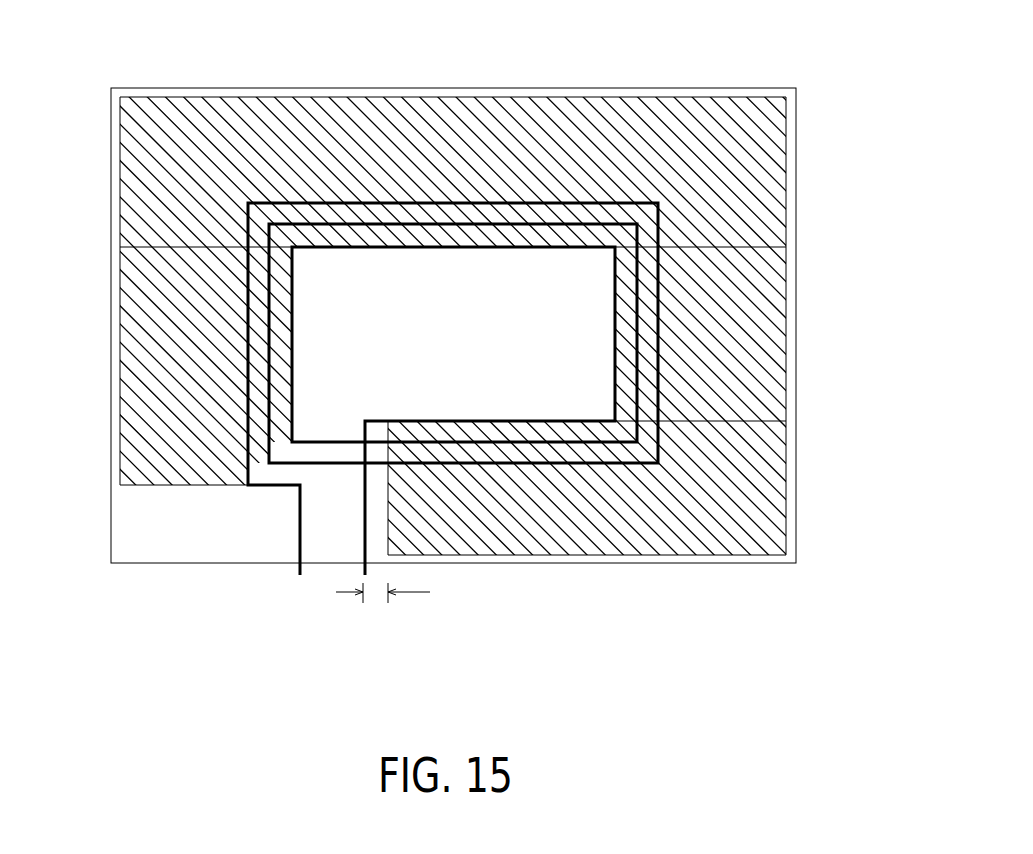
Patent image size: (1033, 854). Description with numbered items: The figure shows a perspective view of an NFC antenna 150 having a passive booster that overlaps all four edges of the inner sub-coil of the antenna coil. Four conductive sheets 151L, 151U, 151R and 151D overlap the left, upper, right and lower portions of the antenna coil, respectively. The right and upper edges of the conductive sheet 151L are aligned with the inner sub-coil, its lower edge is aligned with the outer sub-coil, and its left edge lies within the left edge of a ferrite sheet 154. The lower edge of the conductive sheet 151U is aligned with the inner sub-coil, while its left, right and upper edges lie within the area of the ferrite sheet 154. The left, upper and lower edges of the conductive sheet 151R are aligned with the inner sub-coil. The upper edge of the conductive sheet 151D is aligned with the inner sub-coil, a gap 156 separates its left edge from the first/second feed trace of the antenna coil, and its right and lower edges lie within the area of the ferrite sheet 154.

The NFC antenna 150 is at (727, 61).
The conductive sheet 151U is at (458, 110).
The conductive sheet 151L is at (137, 370).
The conductive sheet 151R is at (770, 303).
The conductive sheet 151D is at (548, 556).
The ferrite sheet 154 is at (128, 513).
The gap 156 is at (403, 593).